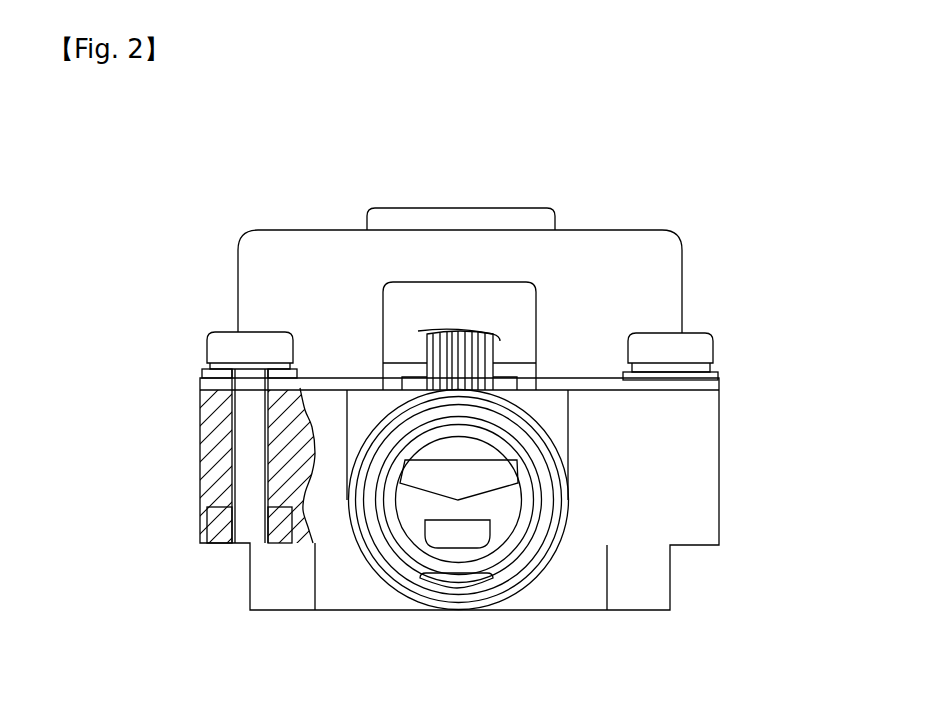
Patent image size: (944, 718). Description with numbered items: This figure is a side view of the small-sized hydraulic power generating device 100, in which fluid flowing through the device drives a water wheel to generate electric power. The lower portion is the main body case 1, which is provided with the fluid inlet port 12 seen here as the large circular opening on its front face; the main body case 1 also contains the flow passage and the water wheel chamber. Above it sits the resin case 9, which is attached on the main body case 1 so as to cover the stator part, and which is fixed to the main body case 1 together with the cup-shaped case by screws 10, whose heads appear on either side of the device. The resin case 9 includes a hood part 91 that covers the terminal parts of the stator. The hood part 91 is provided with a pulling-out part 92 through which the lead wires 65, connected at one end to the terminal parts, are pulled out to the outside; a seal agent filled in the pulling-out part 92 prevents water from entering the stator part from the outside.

The hydraulic power generating device 100 is at (733, 178).
The main body case 1 is at (708, 472).
The resin case 9 is at (620, 283).
The hood part 91 is at (520, 308).
The pulling-out part 92 is at (413, 377).
The lead wires 65 is at (427, 331).
The screws 10 is at (222, 342).
The fluid inlet port 12 is at (518, 563).